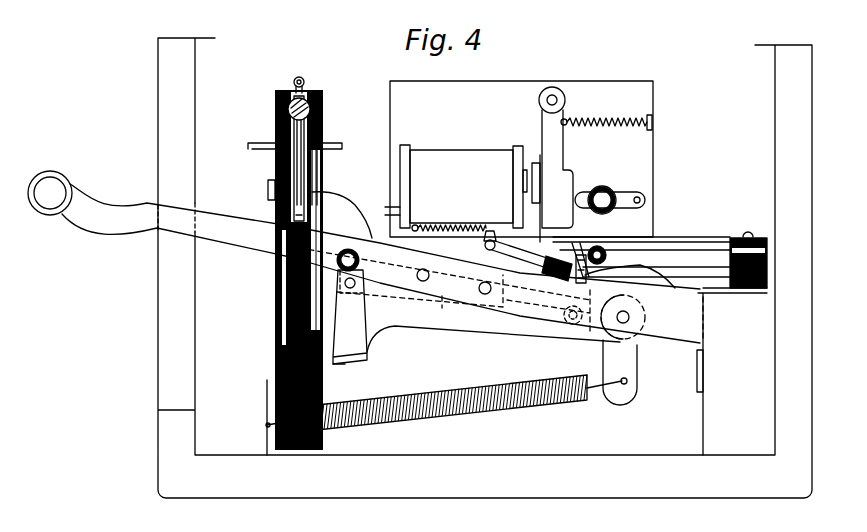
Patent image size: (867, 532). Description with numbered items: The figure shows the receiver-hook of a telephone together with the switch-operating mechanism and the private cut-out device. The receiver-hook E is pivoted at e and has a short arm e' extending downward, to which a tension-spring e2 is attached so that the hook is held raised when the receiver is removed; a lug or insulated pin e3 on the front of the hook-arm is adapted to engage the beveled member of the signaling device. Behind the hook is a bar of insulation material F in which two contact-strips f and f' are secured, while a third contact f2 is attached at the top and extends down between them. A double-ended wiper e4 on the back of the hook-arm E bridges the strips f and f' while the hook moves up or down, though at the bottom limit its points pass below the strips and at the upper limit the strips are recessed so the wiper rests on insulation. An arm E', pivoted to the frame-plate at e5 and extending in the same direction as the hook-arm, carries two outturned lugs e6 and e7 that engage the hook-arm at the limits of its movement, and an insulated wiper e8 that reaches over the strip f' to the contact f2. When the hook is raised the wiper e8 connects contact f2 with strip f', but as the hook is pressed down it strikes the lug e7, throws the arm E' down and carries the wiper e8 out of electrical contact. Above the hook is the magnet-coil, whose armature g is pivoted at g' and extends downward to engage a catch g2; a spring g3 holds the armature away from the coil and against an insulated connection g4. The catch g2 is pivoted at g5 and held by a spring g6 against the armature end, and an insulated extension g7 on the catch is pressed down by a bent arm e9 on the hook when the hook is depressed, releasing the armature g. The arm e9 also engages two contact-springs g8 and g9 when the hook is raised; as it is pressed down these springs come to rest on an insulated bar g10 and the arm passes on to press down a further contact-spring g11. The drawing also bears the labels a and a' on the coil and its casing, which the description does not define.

The receiver-hook E is at (364, 257).
The arm E' is at (493, 325).
The bar of insulation material F is at (273, 343).
The contact-strip f is at (273, 163).
The contact-strip f' is at (298, 174).
The third contact f2 is at (306, 84).
The magnet coil a is at (456, 186).
The magnet casing a' is at (521, 159).
The armature g is at (565, 198).
The armature pivot g' is at (567, 143).
The catch g2 is at (517, 246).
The spring g3 is at (598, 118).
The insulated connection g4 is at (615, 197).
The catch pivot g5 is at (487, 251).
The spring g6 is at (441, 226).
The insulated extension g7 is at (553, 268).
The contact-spring g8 is at (677, 238).
The contact-spring g9 is at (727, 238).
The insulated bar g10 is at (612, 256).
The contact-spring g11 is at (651, 260).
The hook pivot e is at (633, 317).
The short arm e' is at (653, 351).
The tension-spring e2 is at (543, 405).
The insulated pin e3 is at (367, 317).
The double-ended wiper e4 is at (420, 299).
The arm pivot e5 is at (573, 327).
The outturned lug e6 is at (360, 257).
The outturned lug e7 is at (350, 368).
The insulated wiper e8 is at (350, 206).
The bent arm e9 is at (630, 279).